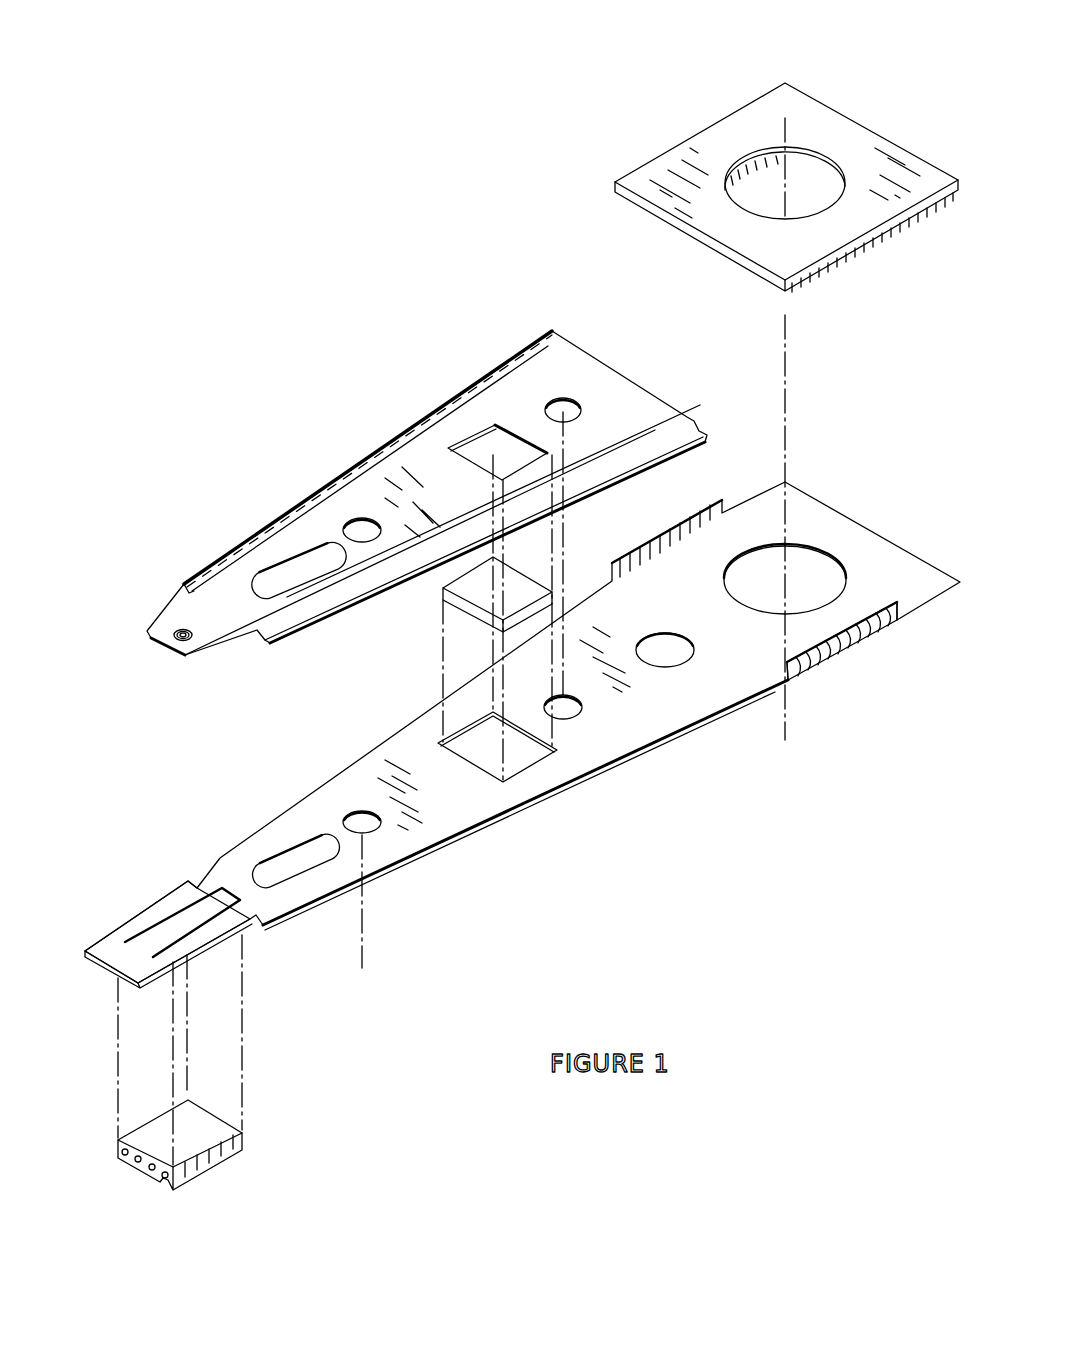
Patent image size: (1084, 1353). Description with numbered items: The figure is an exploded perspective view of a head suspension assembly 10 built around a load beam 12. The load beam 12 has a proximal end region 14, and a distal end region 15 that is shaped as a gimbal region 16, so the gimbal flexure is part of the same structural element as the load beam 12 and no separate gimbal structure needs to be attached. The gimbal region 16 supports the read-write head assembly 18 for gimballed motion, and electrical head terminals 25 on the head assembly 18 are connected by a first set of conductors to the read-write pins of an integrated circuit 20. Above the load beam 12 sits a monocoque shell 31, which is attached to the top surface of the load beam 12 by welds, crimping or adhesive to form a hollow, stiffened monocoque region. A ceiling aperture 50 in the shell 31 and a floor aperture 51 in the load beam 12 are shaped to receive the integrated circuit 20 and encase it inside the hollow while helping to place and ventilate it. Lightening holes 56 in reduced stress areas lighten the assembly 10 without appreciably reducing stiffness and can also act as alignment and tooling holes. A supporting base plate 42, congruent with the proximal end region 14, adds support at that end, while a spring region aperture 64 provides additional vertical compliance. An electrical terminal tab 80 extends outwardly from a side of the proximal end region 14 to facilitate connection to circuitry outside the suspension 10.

The head suspension assembly 10 is at (473, 160).
The load beam 12 is at (507, 840).
The proximal end region 14 is at (842, 694).
The distal end region 15 is at (263, 992).
The gimbal region 16 is at (175, 940).
The head assembly 18 is at (252, 1160).
The integrated circuit 20 is at (497, 585).
The electrical head terminals 25 is at (138, 1161).
The monocoque shell 31 is at (413, 397).
The supporting base plate 42 is at (757, 110).
The ceiling aperture 50 is at (492, 440).
The floor aperture 51 is at (530, 745).
The lightening holes 56 is at (553, 400).
The spring region aperture 64 is at (677, 653).
The electrical terminal tab 80 is at (762, 682).